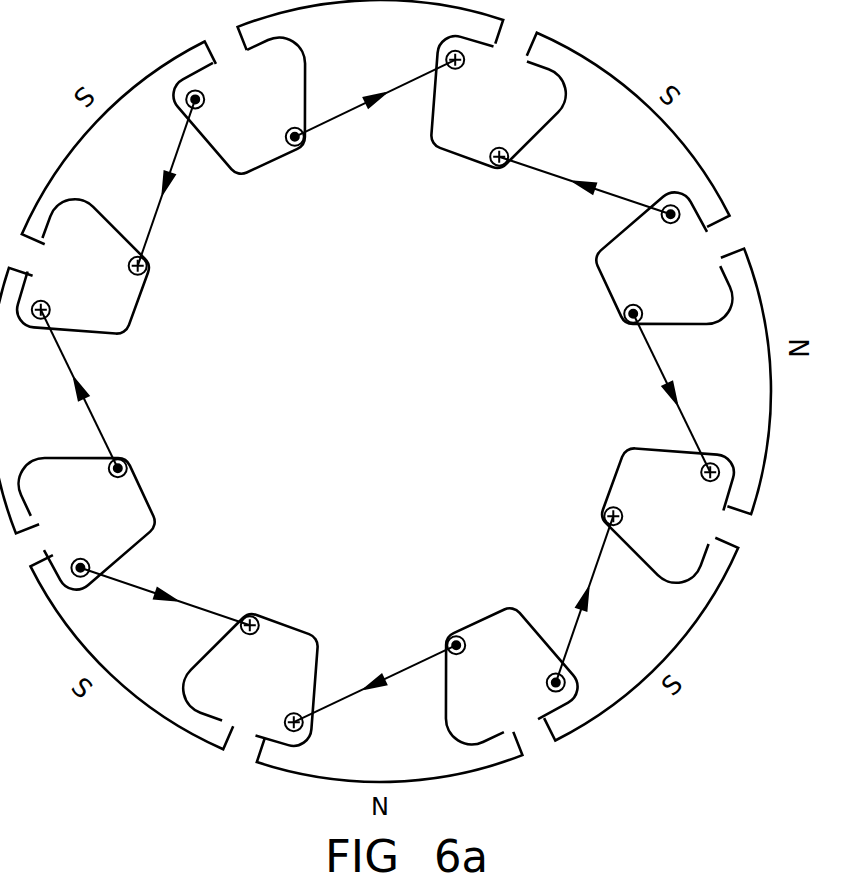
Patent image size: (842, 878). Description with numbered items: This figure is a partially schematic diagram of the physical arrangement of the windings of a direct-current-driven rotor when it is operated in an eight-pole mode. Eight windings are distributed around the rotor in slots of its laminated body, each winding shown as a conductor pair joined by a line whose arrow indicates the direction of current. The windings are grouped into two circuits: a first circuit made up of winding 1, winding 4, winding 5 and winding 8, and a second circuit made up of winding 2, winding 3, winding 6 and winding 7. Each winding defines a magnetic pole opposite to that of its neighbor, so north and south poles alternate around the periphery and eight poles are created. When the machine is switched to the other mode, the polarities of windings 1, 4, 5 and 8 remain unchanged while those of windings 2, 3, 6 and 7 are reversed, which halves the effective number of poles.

The winding 1 is at (375, 98).
The winding 2 is at (584, 186).
The winding 3 is at (671, 393).
The winding 4 is at (585, 599).
The winding 5 is at (375, 683).
The winding 6 is at (164, 597).
The winding 7 is at (79, 389).
The winding 8 is at (167, 182).